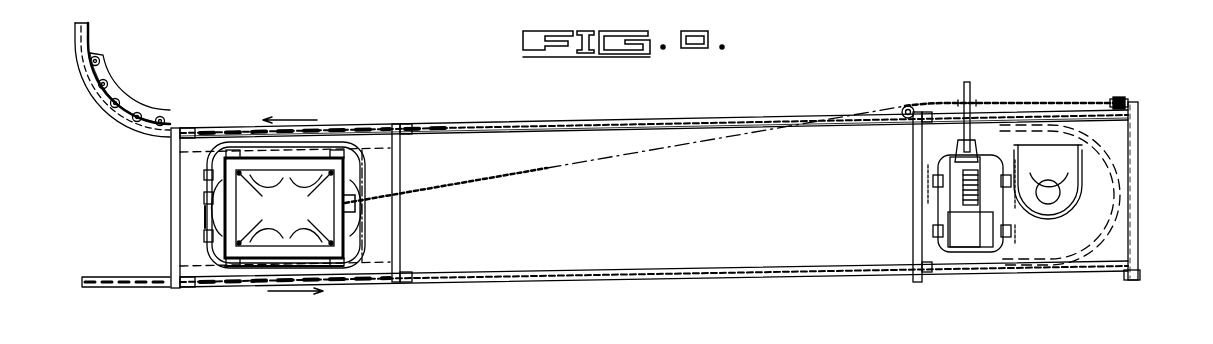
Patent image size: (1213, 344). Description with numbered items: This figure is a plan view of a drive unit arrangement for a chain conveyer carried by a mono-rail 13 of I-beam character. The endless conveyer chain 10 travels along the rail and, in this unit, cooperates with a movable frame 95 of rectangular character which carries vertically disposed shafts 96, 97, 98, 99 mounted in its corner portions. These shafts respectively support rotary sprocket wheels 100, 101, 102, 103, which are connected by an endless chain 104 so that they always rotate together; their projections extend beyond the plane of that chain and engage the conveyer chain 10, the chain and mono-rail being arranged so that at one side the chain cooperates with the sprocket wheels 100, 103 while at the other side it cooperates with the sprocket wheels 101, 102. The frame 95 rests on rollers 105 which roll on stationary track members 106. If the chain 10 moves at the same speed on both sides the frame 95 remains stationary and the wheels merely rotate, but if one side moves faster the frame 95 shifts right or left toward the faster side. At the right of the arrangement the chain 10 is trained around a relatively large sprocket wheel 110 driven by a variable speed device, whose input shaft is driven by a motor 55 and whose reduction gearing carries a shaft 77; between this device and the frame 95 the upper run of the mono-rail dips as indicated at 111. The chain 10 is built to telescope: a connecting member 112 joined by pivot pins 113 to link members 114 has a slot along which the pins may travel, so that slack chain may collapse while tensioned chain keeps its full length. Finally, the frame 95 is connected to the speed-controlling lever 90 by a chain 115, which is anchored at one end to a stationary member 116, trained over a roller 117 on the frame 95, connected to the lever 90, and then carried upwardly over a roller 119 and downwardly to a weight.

The conveyer chain 10 is at (350, 286).
The mono-rail 13 is at (140, 139).
The motor 55 is at (940, 236).
The shaft 77 is at (1052, 190).
The lever 90 is at (972, 85).
The movable frame 95 is at (348, 240).
The vertically disposed shaft 96 is at (345, 222).
The vertically disposed shaft 97 is at (340, 186).
The vertically disposed shaft 98 is at (235, 183).
The vertically disposed shaft 99 is at (240, 243).
The rotary sprocket wheel 100 is at (285, 228).
The rotary sprocket wheel 101 is at (285, 187).
The rotary sprocket wheel 102 is at (235, 170).
The rotary sprocket wheel 103 is at (287, 208).
The endless chain 104 is at (238, 200).
The roller 105 is at (340, 258).
The stationary track member 106 is at (352, 168).
The large sprocket wheel 110 is at (1138, 217).
The dip 111 is at (697, 127).
The connecting member 112 is at (363, 128).
The pivot pin 113 is at (352, 128).
The link member 114 is at (330, 127).
The chain 115 is at (547, 171).
The stationary member 116 is at (410, 192).
The roller 117 is at (352, 203).
The roller 119 is at (1118, 94).